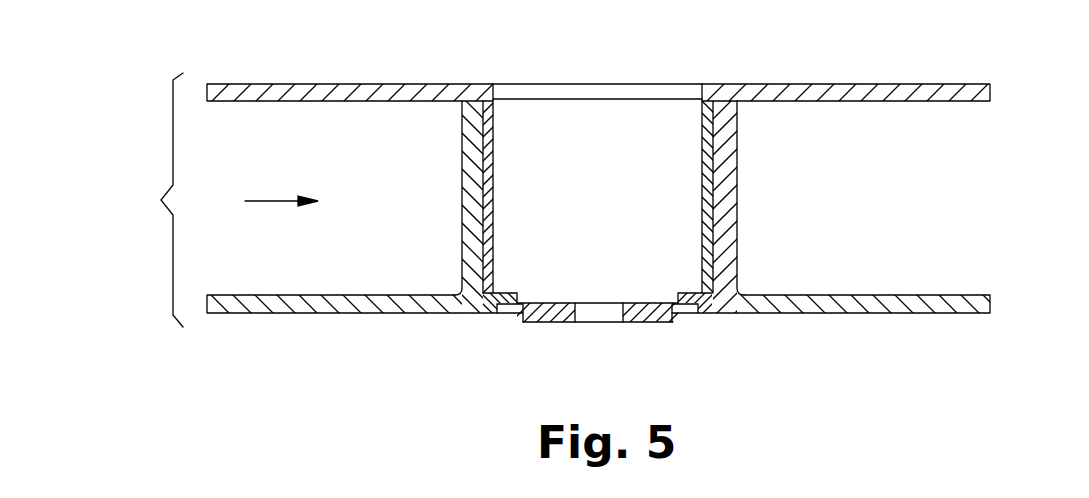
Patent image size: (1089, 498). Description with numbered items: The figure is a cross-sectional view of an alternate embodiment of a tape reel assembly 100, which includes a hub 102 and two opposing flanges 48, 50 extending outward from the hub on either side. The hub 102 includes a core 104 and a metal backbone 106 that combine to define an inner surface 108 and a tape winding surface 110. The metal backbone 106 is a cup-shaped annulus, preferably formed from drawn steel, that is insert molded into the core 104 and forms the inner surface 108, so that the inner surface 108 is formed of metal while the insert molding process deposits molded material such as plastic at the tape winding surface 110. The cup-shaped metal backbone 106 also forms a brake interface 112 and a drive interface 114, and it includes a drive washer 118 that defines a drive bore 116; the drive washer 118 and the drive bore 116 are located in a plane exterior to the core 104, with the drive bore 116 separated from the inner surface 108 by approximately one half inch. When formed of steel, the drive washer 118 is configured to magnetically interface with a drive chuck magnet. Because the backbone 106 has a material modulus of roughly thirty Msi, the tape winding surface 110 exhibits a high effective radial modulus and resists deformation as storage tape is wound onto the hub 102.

The flange 48 is at (992, 92).
The flange 50 is at (992, 304).
The tape reel assembly 100 is at (146, 200).
The hub 102 is at (259, 203).
The core 104 is at (470, 168).
The metal backbone 106 is at (694, 126).
The inner surface 108 is at (500, 124).
The tape winding surface 110 is at (463, 268).
The brake interface 112 is at (696, 291).
The drive interface 114 is at (690, 321).
The drive bore 116 is at (594, 323).
The drive washer 118 is at (652, 323).